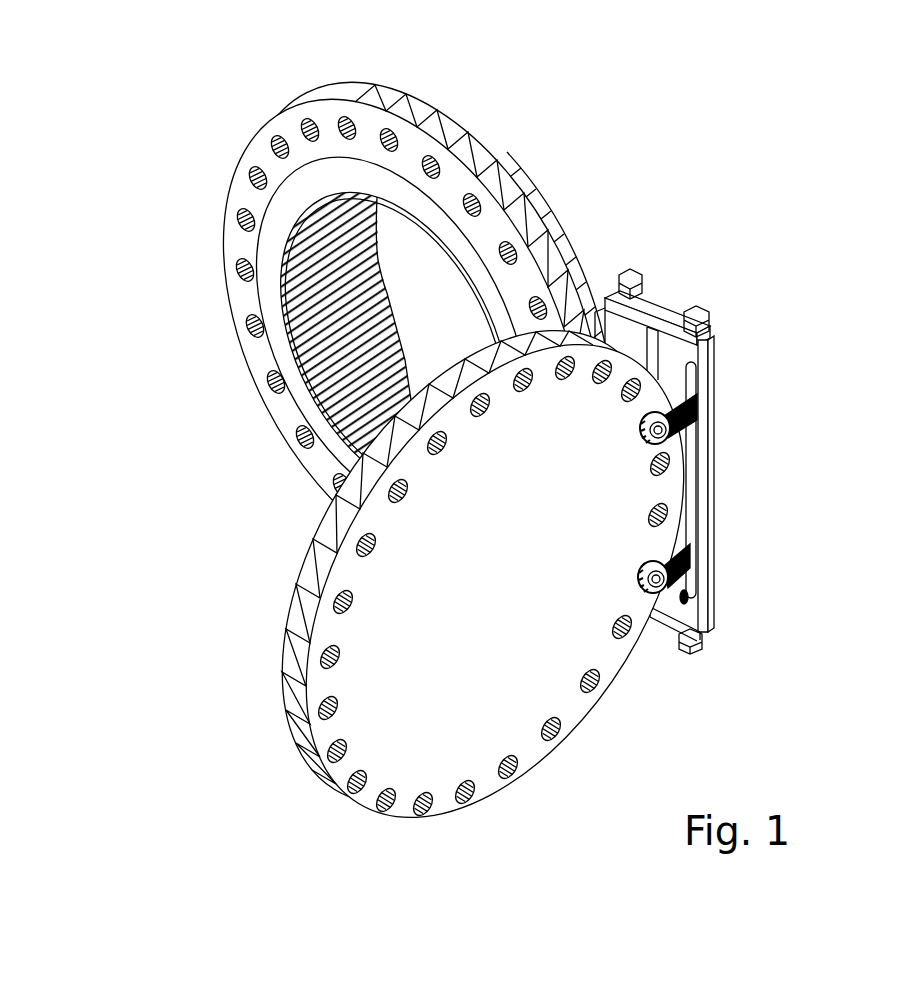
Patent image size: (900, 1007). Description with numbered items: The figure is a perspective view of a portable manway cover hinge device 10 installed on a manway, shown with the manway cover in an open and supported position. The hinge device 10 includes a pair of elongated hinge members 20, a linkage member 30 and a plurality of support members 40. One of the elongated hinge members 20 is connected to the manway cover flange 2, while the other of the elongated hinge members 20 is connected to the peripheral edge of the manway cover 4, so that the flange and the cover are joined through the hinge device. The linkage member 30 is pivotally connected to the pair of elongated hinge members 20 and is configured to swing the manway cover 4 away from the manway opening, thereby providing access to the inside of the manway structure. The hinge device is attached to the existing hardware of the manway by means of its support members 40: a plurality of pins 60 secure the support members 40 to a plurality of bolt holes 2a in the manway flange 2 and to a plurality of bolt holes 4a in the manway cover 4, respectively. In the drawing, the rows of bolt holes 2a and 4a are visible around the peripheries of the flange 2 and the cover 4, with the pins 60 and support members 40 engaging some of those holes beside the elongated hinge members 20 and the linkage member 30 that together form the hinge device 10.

The portable manway cover hinge device 10 is at (482, 453).
The manway cover flange 2 is at (452, 127).
The bolt holes 2a is at (255, 178).
The manway cover 4 is at (290, 727).
The bolt holes 4a is at (477, 413).
The elongated hinge members 20 is at (708, 367).
The linkage member 30 is at (662, 296).
The support members 40 is at (680, 423).
The pins 60 is at (660, 578).